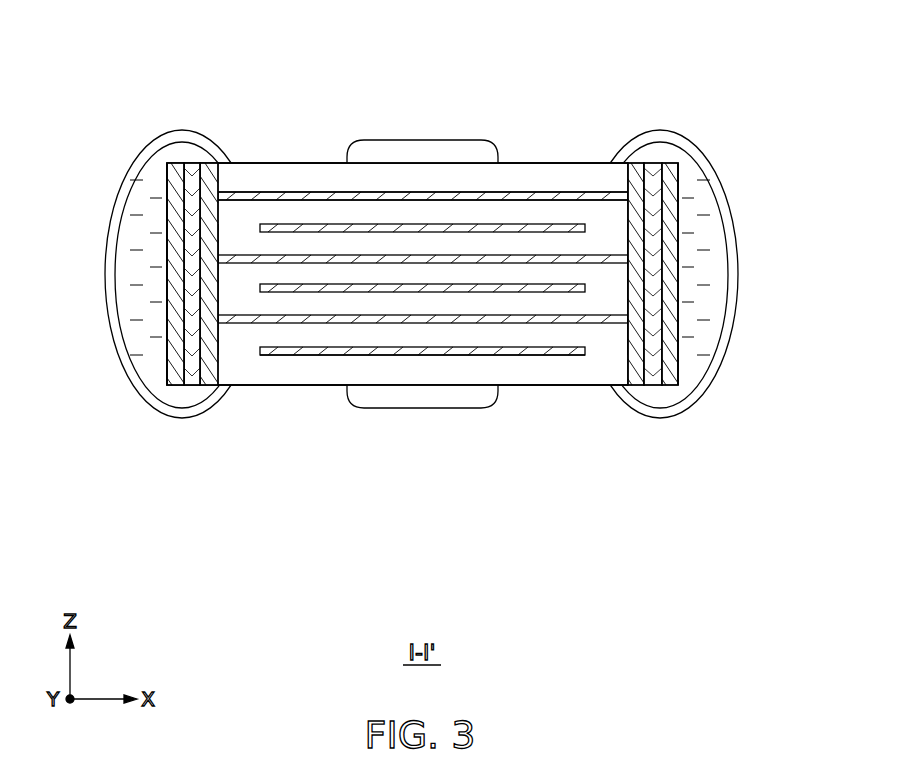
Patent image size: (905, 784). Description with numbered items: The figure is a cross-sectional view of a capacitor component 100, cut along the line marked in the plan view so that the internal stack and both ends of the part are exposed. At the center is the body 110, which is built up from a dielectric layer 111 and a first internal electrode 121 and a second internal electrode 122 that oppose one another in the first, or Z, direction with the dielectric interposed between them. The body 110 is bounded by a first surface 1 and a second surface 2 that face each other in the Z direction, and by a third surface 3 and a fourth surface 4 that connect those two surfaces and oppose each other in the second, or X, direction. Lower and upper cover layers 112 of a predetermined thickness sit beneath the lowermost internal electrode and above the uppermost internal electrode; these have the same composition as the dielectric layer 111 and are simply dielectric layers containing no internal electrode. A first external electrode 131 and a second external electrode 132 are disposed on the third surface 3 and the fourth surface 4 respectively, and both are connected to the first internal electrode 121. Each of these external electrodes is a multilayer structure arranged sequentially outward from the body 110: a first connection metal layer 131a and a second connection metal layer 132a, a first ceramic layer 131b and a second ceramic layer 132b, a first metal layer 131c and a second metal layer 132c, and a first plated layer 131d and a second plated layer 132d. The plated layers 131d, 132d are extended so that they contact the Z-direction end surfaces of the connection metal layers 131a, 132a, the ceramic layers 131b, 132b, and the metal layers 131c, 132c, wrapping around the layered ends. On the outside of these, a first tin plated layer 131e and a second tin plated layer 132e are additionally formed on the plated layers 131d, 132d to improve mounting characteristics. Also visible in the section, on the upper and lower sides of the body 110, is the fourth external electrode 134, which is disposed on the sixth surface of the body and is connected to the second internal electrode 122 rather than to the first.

The capacitor component 100 is at (137, 46).
The first surface 1 is at (322, 386).
The second surface 2 is at (300, 162).
The third surface 3 is at (217, 278).
The fourth surface 4 is at (628, 273).
The body 110 is at (543, 163).
The dielectric layer 111 is at (573, 213).
The cover layers 112 is at (517, 172).
The first internal electrode 121 is at (567, 194).
The second internal electrode 122 is at (575, 228).
The first external electrode 131 is at (173, 347).
The first connection metal layer 131a is at (207, 375).
The first ceramic layer 131b is at (192, 373).
The first metal layer 131c is at (175, 373).
The first plated layer 131d is at (174, 331).
The first tin (Sn) plated layer 131e is at (128, 360).
The second external electrode 132 is at (672, 347).
The second connection metal layer 132a is at (636, 373).
The second ceramic layer 132b is at (653, 373).
The second metal layer 132c is at (672, 373).
The second plated layer 132d is at (670, 331).
The second tin (Sn) plated layer 132e is at (720, 358).
The fourth external electrode 134 is at (423, 397).